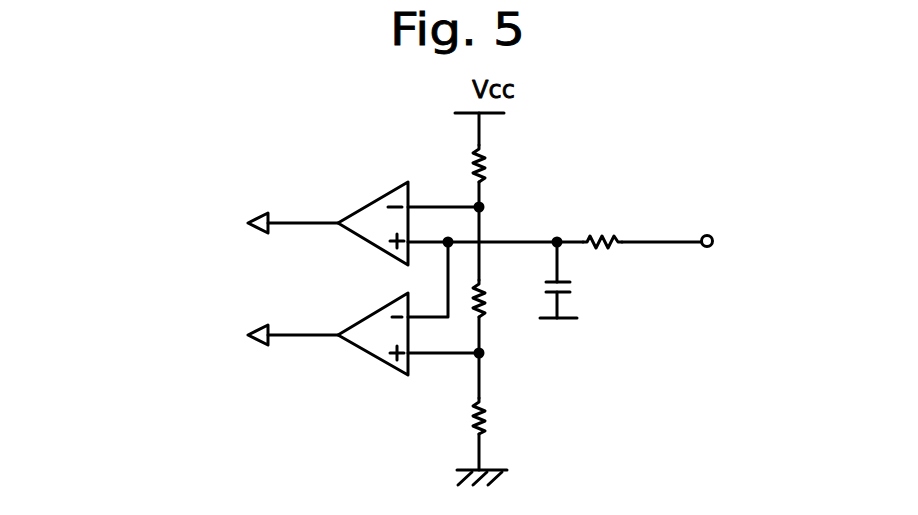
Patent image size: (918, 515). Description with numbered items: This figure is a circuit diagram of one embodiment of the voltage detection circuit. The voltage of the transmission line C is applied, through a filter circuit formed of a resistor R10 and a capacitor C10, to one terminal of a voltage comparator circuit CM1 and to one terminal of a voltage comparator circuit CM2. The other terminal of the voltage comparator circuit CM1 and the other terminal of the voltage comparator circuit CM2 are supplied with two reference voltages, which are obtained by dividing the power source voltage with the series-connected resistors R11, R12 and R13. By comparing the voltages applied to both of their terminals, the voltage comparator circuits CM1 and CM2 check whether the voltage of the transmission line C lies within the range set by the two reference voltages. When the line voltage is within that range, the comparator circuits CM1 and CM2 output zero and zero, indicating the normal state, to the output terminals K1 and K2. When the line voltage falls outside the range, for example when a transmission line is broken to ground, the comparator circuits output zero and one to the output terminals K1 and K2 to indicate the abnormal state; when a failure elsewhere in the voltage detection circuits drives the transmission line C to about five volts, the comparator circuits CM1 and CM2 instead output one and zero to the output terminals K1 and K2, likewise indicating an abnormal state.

The voltage comparator circuit CM1 is at (376, 202).
The voltage comparator circuit CM2 is at (366, 357).
The resistor R10 is at (605, 223).
The resistor R11 is at (503, 176).
The resistor R12 is at (503, 316).
The resistor R13 is at (503, 434).
The capacitor C10 is at (582, 280).
The output terminal K1 is at (154, 222).
The output terminal K2 is at (154, 355).
The transmission line C is at (764, 240).